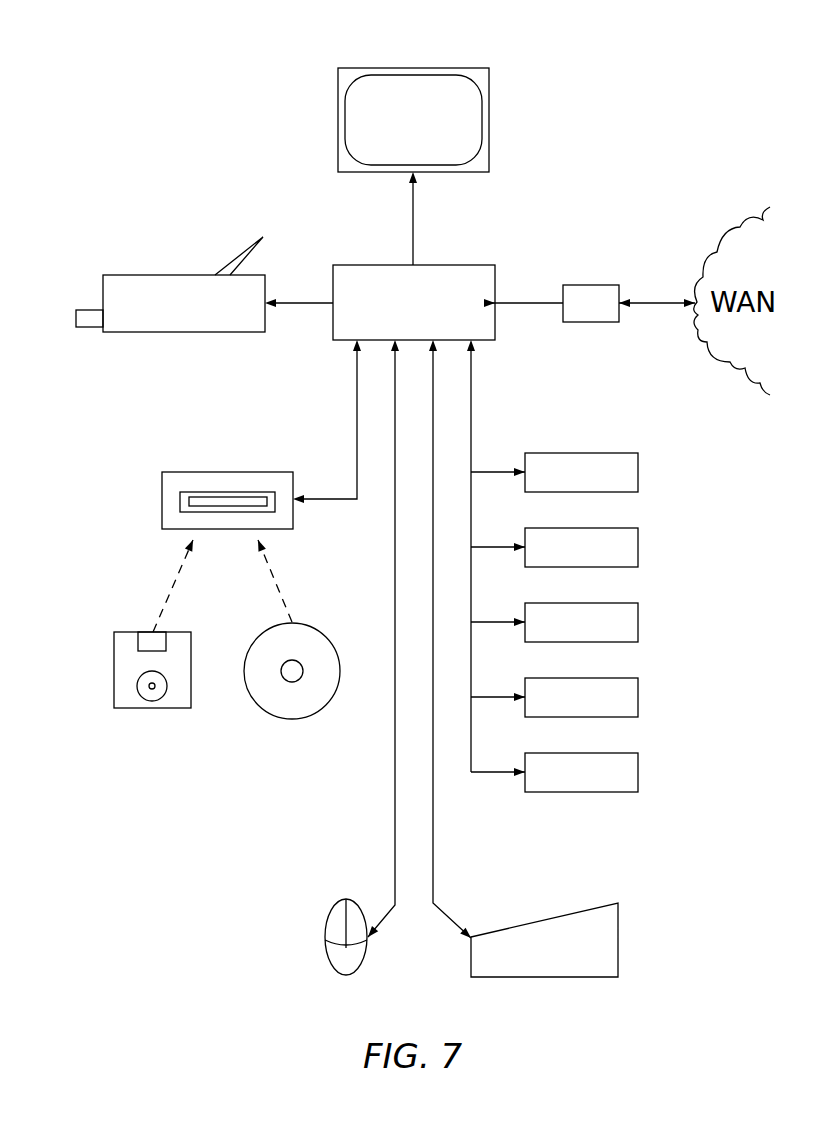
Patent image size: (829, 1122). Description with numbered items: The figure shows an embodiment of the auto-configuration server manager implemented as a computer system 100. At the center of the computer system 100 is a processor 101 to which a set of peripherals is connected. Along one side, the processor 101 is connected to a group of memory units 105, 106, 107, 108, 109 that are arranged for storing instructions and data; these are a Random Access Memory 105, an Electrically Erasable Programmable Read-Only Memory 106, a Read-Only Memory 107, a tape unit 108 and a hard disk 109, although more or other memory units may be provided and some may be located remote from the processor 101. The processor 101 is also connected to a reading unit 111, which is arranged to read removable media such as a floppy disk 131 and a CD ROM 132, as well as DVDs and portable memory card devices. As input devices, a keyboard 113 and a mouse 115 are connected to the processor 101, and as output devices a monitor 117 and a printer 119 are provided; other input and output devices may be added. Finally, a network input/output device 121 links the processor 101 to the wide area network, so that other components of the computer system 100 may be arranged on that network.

The computer system 100 is at (226, 88).
The processor 101 is at (460, 268).
The Random Access Memory (RAM) 105 is at (638, 470).
The (Electrically) Erasable Programmable Read-Only Memory ((E)EPROM) 106 is at (638, 545).
The Read-Only Memory (ROM) 107 is at (638, 620).
The tape unit 108 is at (638, 695).
The hard disk 109 is at (638, 770).
The reading unit 111 is at (263, 475).
The keyboard 113 is at (618, 912).
The mouse 115 is at (330, 919).
The monitor 117 is at (483, 77).
The printer 119 is at (105, 284).
The modem / network interface 121 is at (597, 288).
The floppy disk 131 is at (114, 640).
The CD ROM 132 is at (317, 638).